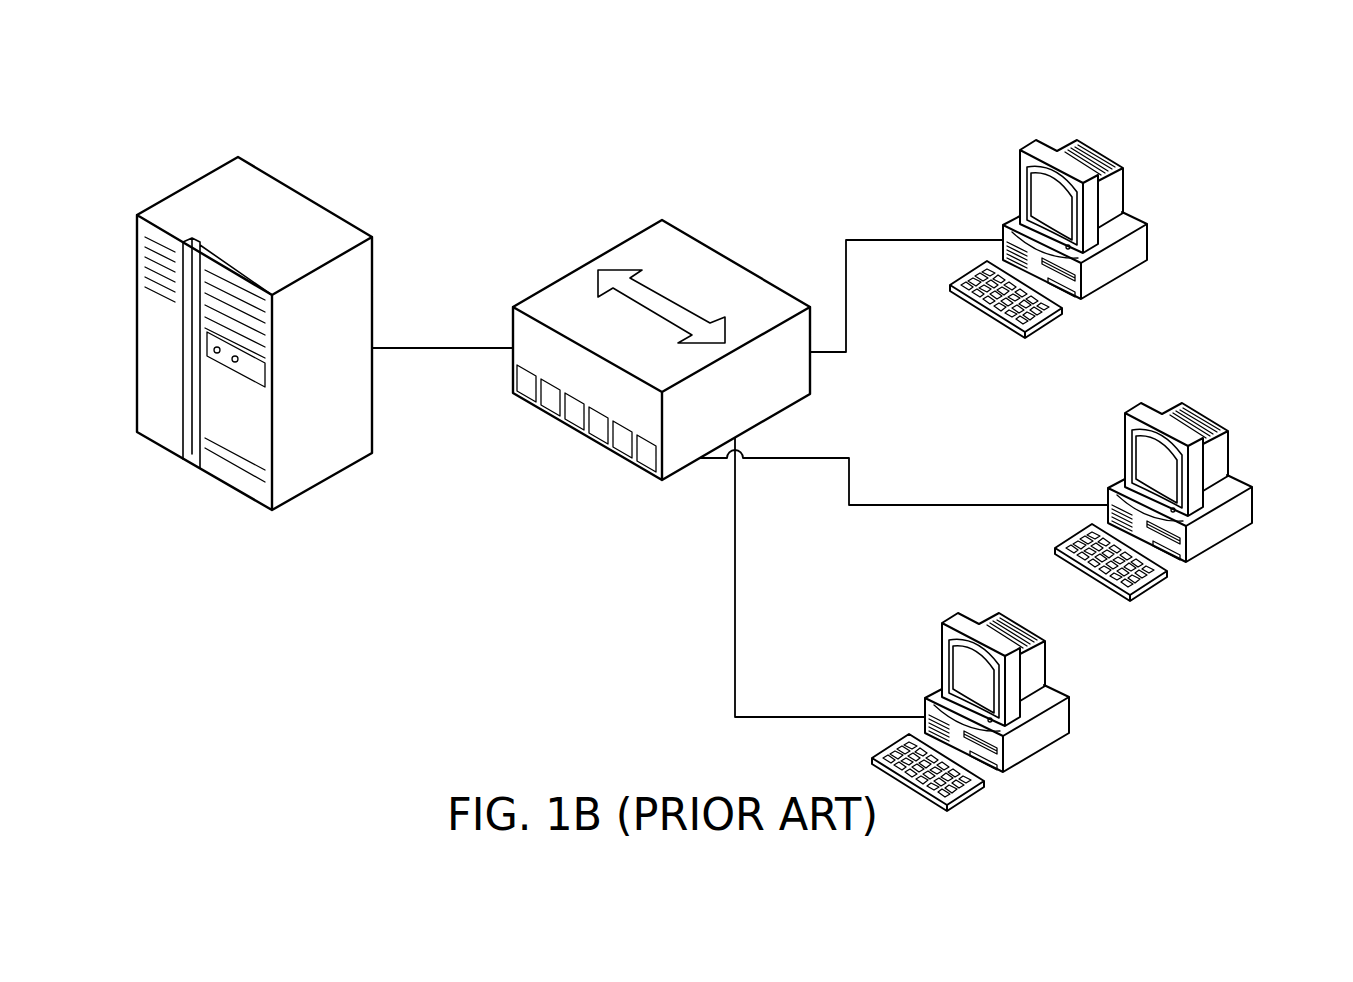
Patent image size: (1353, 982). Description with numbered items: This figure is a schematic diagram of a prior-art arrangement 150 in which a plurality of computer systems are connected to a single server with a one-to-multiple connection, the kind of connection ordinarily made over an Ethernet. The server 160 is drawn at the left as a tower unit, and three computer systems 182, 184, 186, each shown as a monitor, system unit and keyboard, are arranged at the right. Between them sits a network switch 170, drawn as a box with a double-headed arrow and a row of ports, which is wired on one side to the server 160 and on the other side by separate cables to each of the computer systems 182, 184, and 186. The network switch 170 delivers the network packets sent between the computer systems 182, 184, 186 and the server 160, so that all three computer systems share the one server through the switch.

The prior art network system 150 is at (1226, 105).
The server 160 is at (293, 202).
The network switch 170 is at (726, 270).
The computer system 182 is at (1152, 242).
The computer system 184 is at (1257, 505).
The computer system 186 is at (1074, 715).